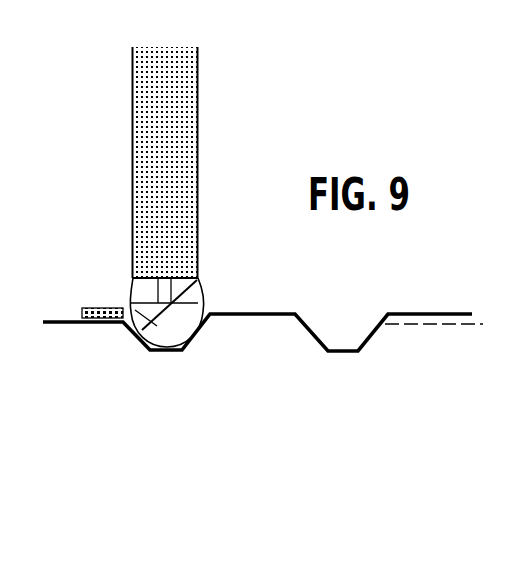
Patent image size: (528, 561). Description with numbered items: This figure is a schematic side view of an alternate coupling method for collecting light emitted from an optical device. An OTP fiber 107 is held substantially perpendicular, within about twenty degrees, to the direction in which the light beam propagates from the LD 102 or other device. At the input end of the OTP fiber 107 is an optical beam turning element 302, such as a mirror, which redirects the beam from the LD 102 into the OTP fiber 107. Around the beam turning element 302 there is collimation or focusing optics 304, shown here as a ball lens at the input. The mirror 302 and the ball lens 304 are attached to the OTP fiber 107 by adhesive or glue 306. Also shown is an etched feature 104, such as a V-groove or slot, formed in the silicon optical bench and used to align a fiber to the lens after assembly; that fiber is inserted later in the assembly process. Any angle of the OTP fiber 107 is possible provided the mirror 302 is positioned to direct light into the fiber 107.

The OTP fiber 107 is at (119, 136).
The LD 102 is at (92, 335).
The etched feature 104 is at (448, 336).
The optical beam turning element 302 is at (209, 303).
The collimation or focusing optics 304 is at (125, 310).
The adhesive or glue 306 is at (210, 281).